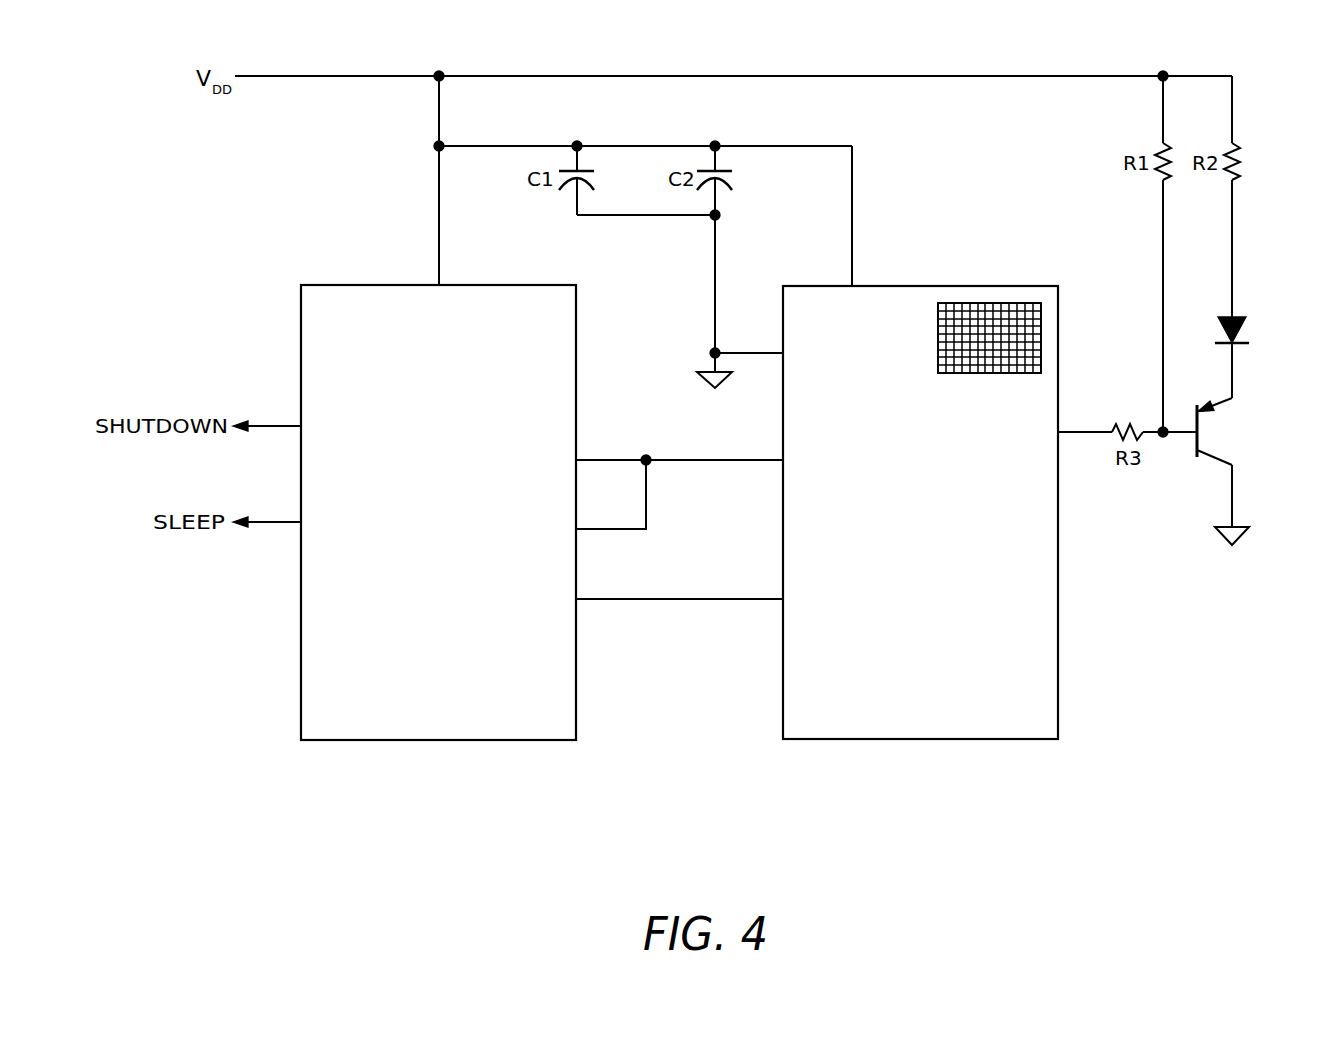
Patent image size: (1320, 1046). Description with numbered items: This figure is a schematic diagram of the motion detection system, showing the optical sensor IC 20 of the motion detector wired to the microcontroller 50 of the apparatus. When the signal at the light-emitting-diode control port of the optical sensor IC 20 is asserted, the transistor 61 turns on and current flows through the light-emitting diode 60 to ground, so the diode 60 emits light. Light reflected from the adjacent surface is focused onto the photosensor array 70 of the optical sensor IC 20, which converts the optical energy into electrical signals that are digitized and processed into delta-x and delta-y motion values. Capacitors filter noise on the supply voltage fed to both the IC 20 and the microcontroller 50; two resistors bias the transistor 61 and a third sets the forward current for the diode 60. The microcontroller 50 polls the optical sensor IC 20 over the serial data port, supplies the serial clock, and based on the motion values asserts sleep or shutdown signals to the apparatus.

The optical sensor IC 20 is at (1000, 710).
The microcontroller 50 is at (451, 715).
The LED 60 is at (1243, 318).
The transistor 61 is at (1196, 444).
The photosensor array 70 is at (938, 318).